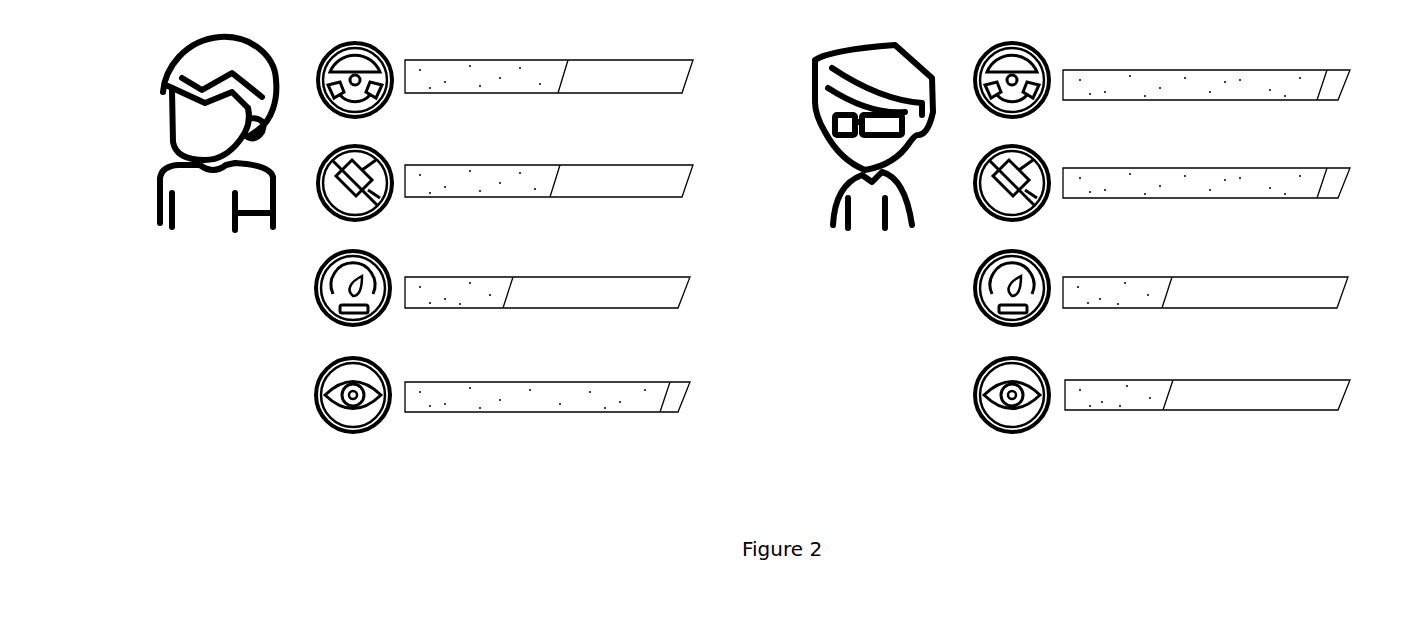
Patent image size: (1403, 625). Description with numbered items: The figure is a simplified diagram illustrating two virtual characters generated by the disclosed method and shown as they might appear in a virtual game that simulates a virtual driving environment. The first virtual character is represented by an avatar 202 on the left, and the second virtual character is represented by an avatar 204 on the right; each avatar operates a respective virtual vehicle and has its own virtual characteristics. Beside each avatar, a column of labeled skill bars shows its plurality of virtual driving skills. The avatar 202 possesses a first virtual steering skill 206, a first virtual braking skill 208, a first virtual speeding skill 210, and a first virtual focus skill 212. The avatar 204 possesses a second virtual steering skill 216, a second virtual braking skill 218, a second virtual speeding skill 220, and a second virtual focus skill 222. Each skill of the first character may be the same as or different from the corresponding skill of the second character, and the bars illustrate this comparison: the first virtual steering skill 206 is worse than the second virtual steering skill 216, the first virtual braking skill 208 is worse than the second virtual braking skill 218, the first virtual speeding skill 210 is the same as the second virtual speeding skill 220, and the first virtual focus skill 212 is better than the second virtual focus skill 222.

The avatar 202 is at (197, 260).
The avatar 204 is at (884, 260).
The first virtual steering skill 206 is at (632, 94).
The first virtual braking skill 208 is at (632, 198).
The first virtual speeding skill 210 is at (632, 309).
The first virtual focus skill 212 is at (632, 413).
The second virtual steering skill 216 is at (1282, 101).
The second virtual braking skill 218 is at (1282, 199).
The second virtual speeding skill 220 is at (1283, 309).
The second virtual focus skill 222 is at (1283, 411).